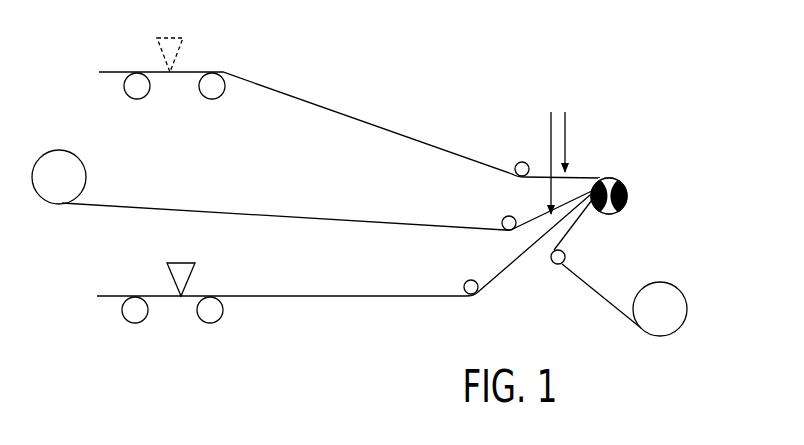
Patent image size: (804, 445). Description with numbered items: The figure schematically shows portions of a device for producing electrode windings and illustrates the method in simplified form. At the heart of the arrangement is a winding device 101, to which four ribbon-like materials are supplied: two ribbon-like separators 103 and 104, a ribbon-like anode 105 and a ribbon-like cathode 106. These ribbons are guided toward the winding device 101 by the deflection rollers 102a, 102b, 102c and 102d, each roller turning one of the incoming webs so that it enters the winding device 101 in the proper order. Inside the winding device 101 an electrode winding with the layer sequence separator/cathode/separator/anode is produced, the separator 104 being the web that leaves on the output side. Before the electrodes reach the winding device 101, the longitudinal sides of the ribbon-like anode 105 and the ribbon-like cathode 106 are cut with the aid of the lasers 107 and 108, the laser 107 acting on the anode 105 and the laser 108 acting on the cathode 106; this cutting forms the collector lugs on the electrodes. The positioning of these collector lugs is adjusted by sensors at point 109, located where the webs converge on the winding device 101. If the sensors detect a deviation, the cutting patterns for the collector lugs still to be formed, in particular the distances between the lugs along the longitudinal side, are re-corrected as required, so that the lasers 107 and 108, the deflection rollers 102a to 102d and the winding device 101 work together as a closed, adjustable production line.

The winding device 101 is at (631, 174).
The deflection roller 102a is at (513, 159).
The deflection roller 102b is at (496, 218).
The deflection roller 102c is at (459, 283).
The deflection roller 102d is at (578, 254).
The ribbon-like separator 103 is at (245, 204).
The ribbon-like separator 104 is at (589, 299).
The ribbon-like anode 105 is at (285, 88).
The ribbon-like cathode 106 is at (234, 293).
The laser 107 is at (151, 43).
The laser 108 is at (161, 271).
The sensor point 109 is at (551, 114).